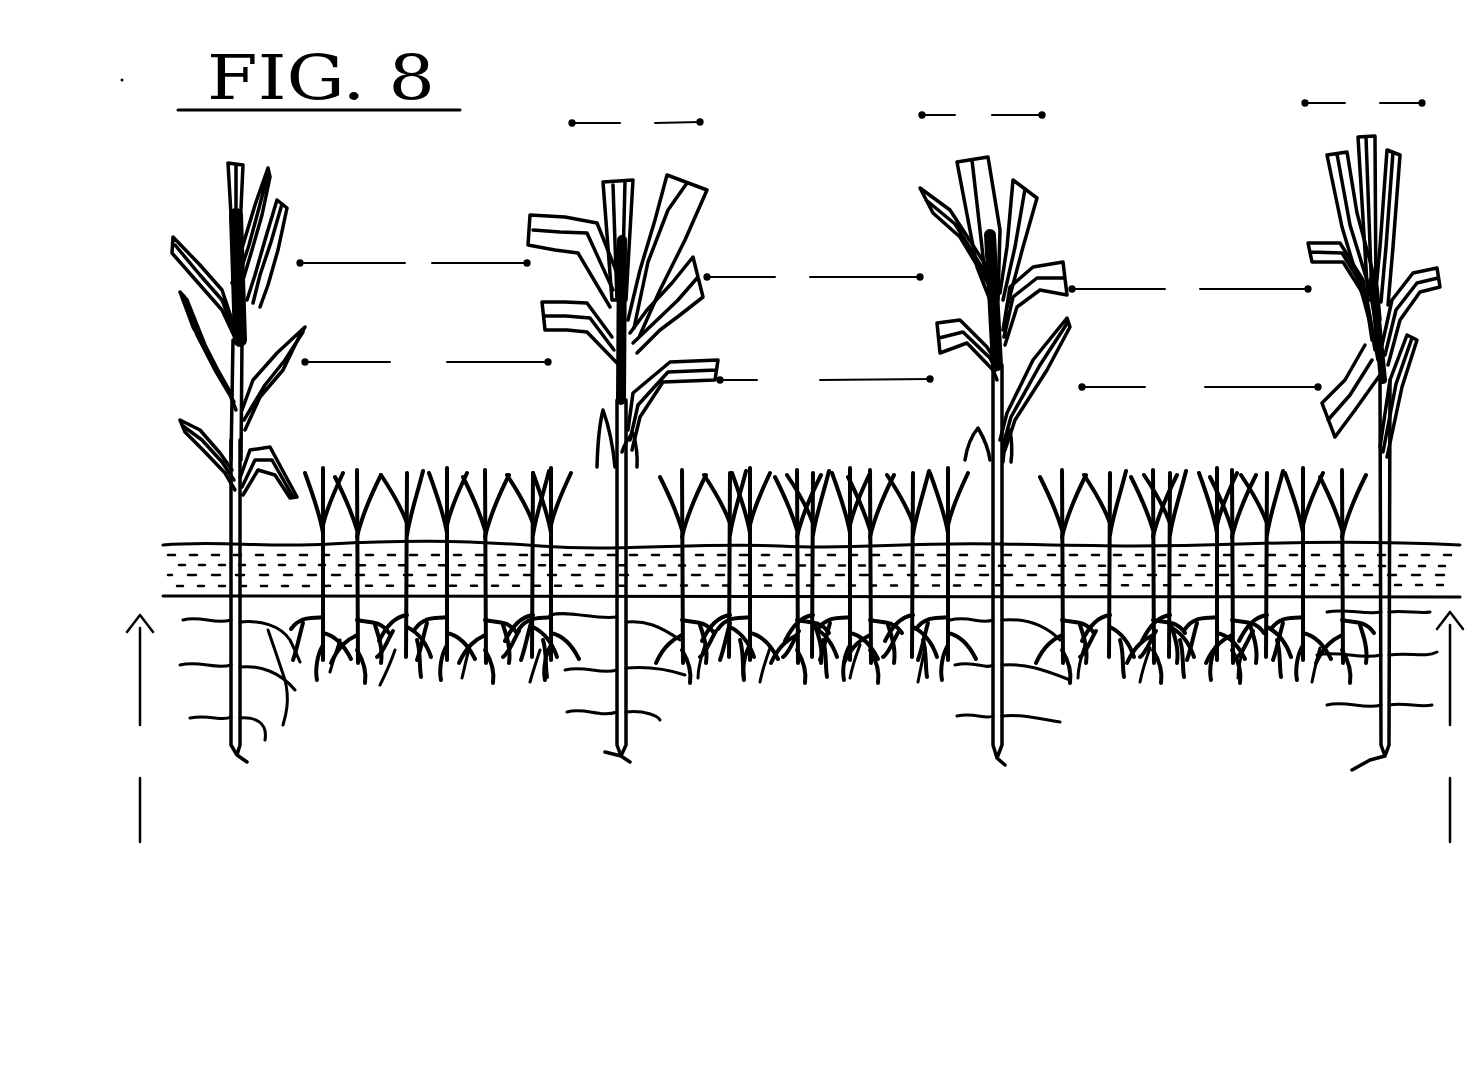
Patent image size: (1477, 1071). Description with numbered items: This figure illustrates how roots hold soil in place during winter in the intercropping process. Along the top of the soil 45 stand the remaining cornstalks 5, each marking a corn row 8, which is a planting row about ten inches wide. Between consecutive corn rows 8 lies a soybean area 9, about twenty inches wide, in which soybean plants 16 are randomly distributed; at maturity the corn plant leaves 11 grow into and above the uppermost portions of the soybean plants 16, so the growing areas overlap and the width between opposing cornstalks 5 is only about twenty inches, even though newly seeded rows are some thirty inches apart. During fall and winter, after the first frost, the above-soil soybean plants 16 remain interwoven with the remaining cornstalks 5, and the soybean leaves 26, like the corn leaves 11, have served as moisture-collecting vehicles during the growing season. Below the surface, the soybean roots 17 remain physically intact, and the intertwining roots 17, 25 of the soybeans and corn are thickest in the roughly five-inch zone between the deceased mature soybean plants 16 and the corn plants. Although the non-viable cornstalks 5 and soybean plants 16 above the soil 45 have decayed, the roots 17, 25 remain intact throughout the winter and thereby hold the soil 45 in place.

The cornstalks 5 is at (222, 500).
The corn row 8 is at (997, 113).
The soybean area 9 is at (804, 277).
The corn plant leaves 11 is at (303, 572).
The soybean plants 16 is at (841, 508).
The soybean roots 17 is at (825, 692).
The corn roots 25 is at (281, 668).
The soybean leaves 26 is at (458, 562).
The soil 45 is at (795, 727).